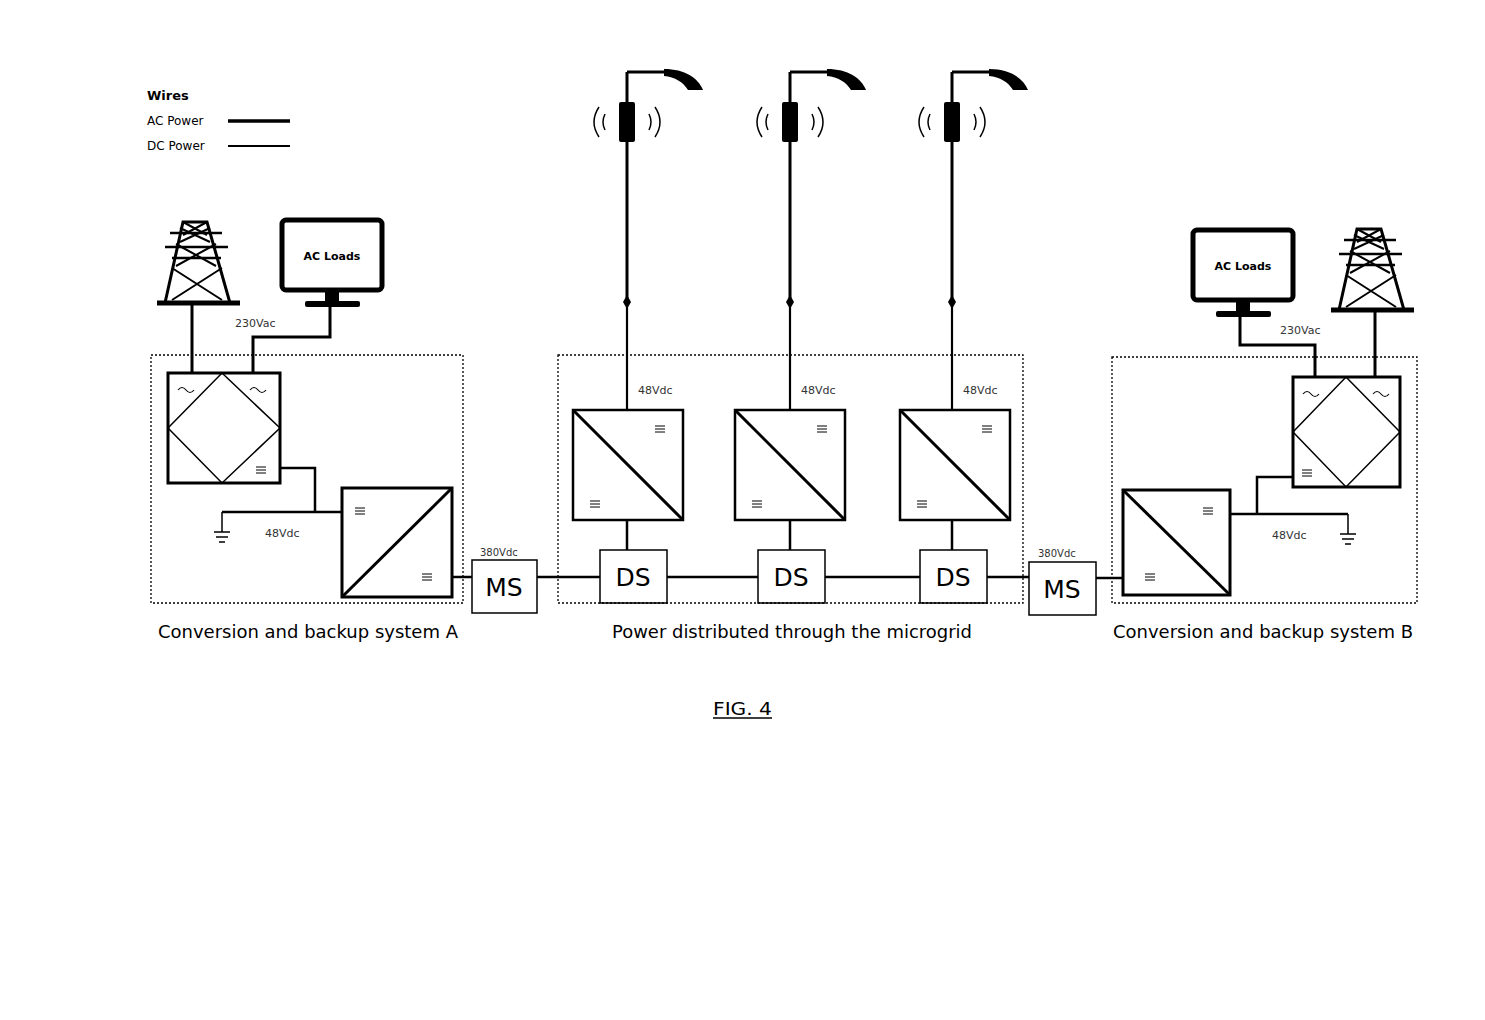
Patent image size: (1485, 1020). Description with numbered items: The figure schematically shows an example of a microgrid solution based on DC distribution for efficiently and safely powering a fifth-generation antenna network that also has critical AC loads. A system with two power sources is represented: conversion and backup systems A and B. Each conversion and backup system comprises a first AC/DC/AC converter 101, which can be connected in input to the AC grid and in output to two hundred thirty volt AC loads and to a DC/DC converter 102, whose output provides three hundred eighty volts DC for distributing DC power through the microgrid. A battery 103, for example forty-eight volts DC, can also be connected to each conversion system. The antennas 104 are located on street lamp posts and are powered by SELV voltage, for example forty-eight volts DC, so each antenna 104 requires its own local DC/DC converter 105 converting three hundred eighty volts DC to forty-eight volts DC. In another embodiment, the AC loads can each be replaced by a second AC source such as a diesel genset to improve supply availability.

The AC/DC/AC converter 101 is at (280, 402).
The DC/DC converter 102 is at (387, 488).
The battery 103 is at (222, 521).
The antenna on street lamp post 104 is at (918, 98).
The local DC/DC converter 105 is at (590, 409).